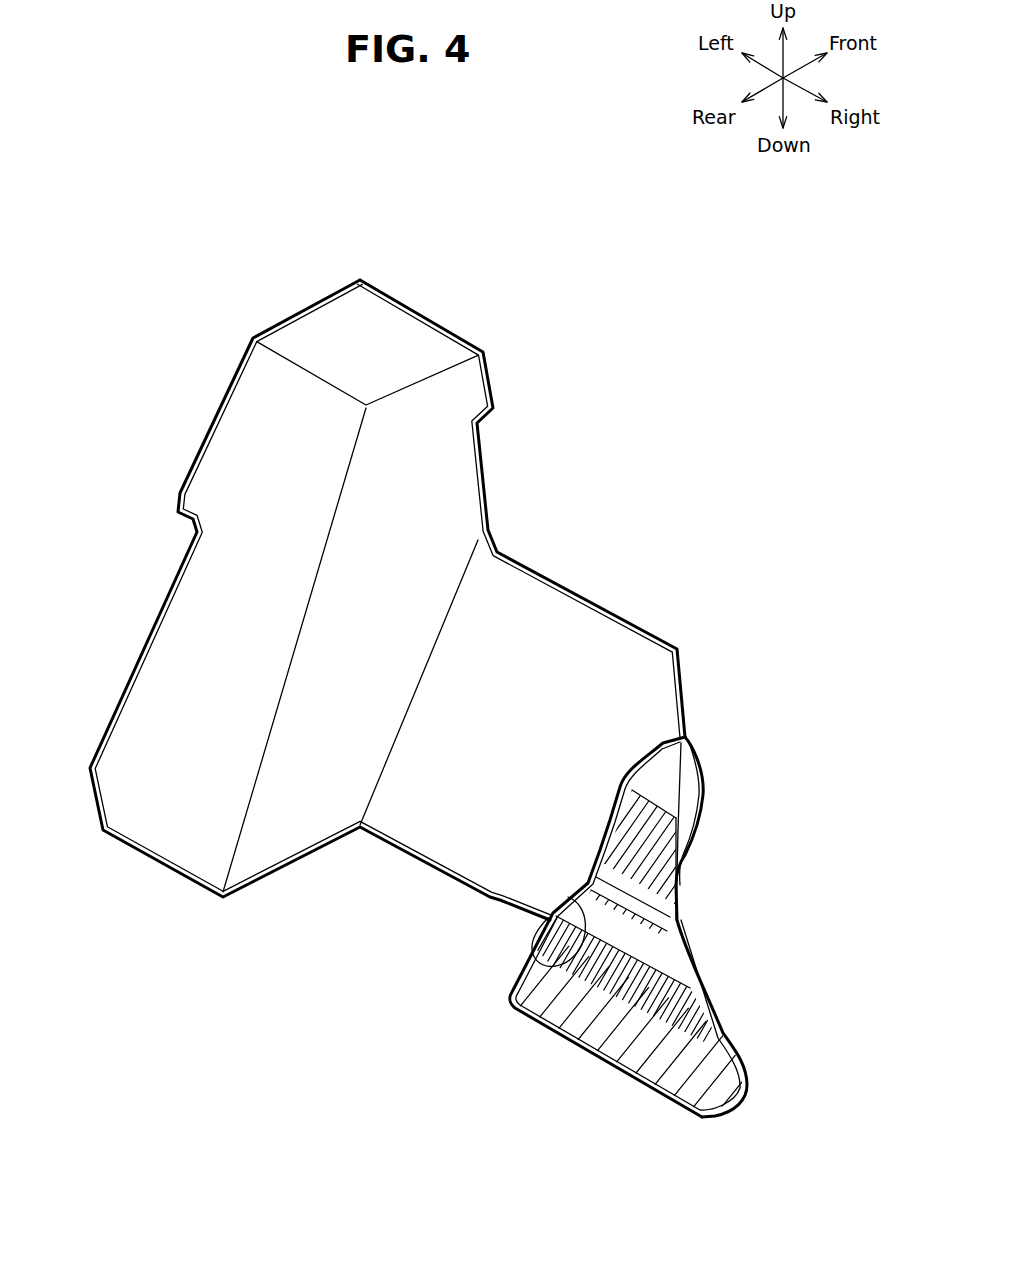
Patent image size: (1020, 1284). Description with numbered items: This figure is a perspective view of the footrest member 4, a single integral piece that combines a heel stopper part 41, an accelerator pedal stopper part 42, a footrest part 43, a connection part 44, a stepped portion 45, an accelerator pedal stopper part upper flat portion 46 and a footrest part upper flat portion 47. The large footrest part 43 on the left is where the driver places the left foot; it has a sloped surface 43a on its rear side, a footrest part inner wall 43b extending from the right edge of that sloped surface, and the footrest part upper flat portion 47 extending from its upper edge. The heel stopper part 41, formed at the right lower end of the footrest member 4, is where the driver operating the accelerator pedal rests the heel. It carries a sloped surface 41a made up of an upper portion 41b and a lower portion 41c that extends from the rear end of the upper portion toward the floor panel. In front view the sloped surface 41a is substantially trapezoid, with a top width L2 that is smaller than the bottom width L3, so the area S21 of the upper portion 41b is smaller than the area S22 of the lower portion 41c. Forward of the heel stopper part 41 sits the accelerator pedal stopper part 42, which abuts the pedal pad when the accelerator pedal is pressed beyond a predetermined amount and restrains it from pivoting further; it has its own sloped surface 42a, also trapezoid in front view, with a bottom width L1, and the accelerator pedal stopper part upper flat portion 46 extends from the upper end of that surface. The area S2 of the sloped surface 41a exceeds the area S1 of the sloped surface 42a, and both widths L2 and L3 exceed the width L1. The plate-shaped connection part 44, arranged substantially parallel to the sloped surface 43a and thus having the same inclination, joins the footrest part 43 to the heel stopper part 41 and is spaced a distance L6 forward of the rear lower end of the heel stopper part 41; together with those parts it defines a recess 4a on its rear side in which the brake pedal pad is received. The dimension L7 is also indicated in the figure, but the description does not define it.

The footrest member 4 is at (296, 278).
The recess 4a is at (383, 873).
The heel stopper part 41 is at (710, 1087).
The sloped surface 41a is at (543, 970).
The upper portion 41b is at (587, 893).
The lower portion 41c is at (558, 993).
The accelerator pedal stopper part 42 is at (653, 843).
The sloped surface 42a is at (647, 833).
The footrest part 43 is at (247, 460).
The sloped surface 43a is at (200, 593).
The footrest part inner wall 43b is at (343, 697).
The connection part 44 is at (568, 635).
The stepped portion 45 is at (653, 942).
The accelerator pedal stopper part upper flat portion 46 is at (660, 780).
The footrest part upper flat portion 47 is at (390, 343).
The area of the sloped surface of the accelerator pedal stopper part S1 is at (658, 820).
The area of the sloped surface of the heel stopper part S2 is at (818, 1003).
The area of the upper portion S21 is at (693, 1005).
The area of the lower portion S22 is at (710, 1067).
The lateral width of the accelerator pedal stopper part L1 is at (675, 907).
The upper-side lateral width L2 is at (693, 1010).
The lower-side lateral width L3 is at (697, 1168).
The distance L6 is at (508, 998).
The length L7 is at (395, 848).